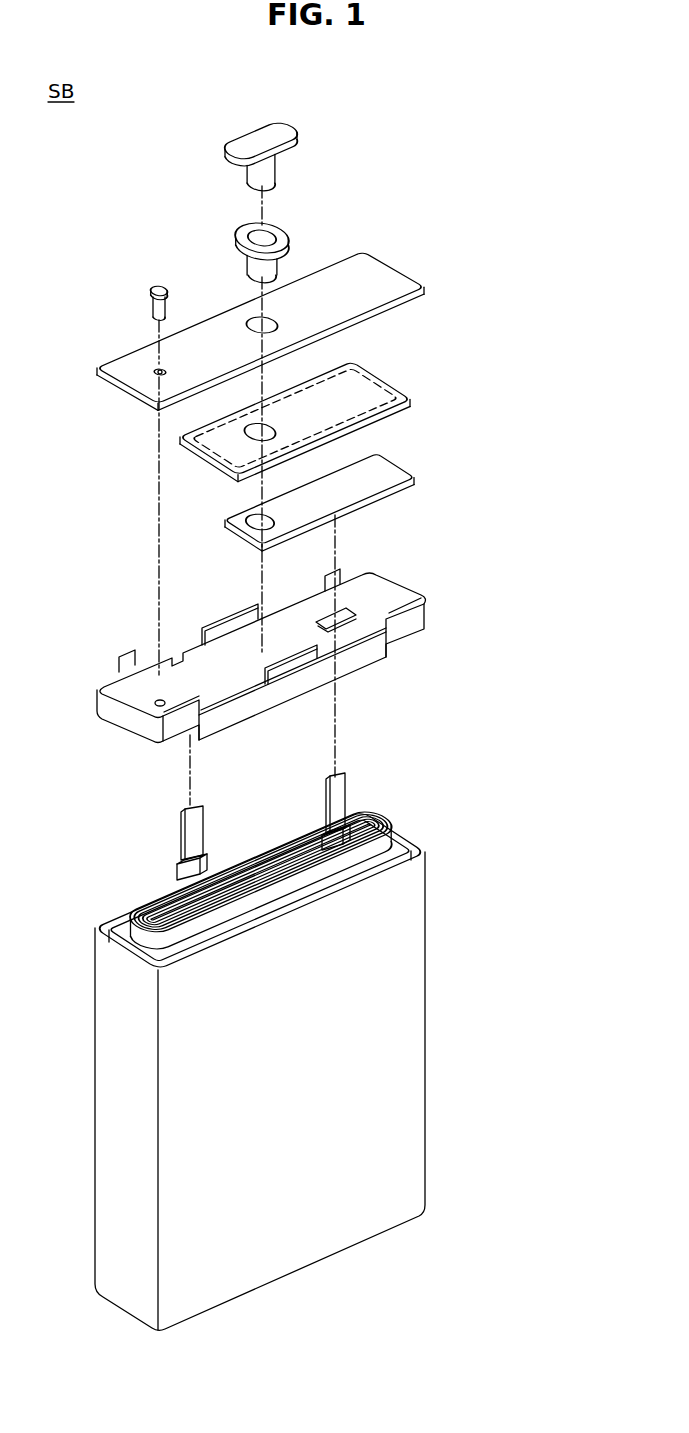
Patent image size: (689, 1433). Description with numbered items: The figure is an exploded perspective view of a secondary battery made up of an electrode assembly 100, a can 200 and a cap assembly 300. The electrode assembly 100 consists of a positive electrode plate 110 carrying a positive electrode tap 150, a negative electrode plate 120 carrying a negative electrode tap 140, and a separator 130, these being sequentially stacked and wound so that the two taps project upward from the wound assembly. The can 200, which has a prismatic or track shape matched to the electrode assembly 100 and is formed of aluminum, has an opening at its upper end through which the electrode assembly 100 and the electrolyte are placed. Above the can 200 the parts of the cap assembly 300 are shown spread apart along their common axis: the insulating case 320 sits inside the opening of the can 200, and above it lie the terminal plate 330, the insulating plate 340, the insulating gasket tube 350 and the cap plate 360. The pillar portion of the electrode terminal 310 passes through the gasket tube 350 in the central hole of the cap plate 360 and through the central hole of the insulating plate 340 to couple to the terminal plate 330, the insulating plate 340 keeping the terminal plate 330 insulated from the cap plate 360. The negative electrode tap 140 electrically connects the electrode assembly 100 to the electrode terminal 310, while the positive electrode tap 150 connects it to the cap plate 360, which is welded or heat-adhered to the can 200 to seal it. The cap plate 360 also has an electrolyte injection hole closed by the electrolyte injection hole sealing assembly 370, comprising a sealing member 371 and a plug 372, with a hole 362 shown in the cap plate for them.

The electrode assembly 100 is at (478, 784).
The positive electrode plate 110 is at (368, 818).
The negative electrode plate 120 is at (387, 823).
The separator 130 is at (377, 828).
The negative electrode tap 140 is at (333, 802).
The positive electrode tap 150 is at (190, 833).
The can 200 is at (412, 954).
The cap assembly 300 is at (536, 158).
The electrode terminal 310 is at (295, 121).
The insulating case 320 is at (390, 577).
The terminal plate 330 is at (377, 467).
The insulating plate 340 is at (372, 372).
The insulating gasket tube 350 is at (282, 228).
The cap plate 360 is at (380, 273).
The fastening hole 362 is at (152, 372).
The electrolyte injection hole sealing assembly 370 is at (112, 233).
The sealing member 371 is at (155, 370).
The plug 372 is at (155, 288).